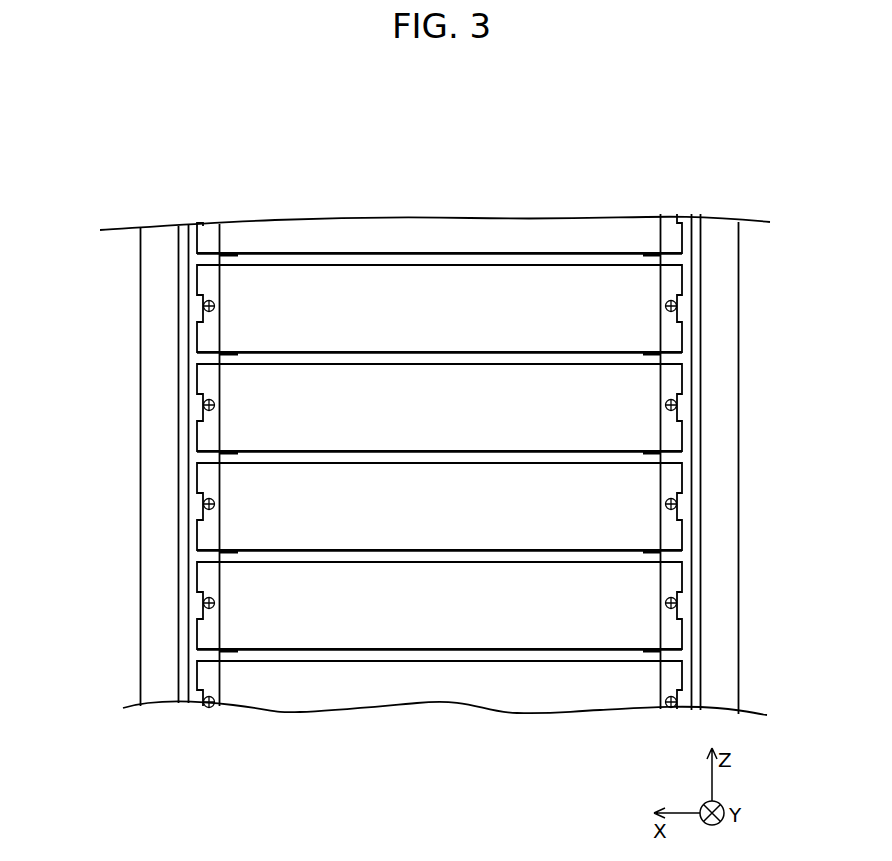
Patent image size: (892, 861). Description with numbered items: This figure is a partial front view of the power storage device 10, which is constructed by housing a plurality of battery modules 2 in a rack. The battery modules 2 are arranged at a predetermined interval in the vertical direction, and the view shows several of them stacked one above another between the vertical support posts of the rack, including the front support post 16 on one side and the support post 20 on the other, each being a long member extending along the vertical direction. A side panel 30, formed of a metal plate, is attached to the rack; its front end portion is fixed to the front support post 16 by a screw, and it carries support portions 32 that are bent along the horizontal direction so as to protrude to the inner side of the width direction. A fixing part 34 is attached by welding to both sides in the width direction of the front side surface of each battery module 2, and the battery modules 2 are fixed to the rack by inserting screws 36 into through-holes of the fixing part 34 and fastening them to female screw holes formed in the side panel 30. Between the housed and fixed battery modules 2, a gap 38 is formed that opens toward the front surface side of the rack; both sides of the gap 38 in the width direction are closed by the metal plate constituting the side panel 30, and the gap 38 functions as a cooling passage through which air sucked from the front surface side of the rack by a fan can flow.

The power storage device 10 is at (466, 190).
The battery module 2 is at (444, 461).
The front support post 16 is at (740, 523).
The support post 20 is at (140, 552).
The side panel 30 is at (197, 458).
The support portion 32 is at (225, 358).
The fixing part 34 is at (203, 437).
The screw 36 is at (209, 313).
The gap 38 is at (367, 257).